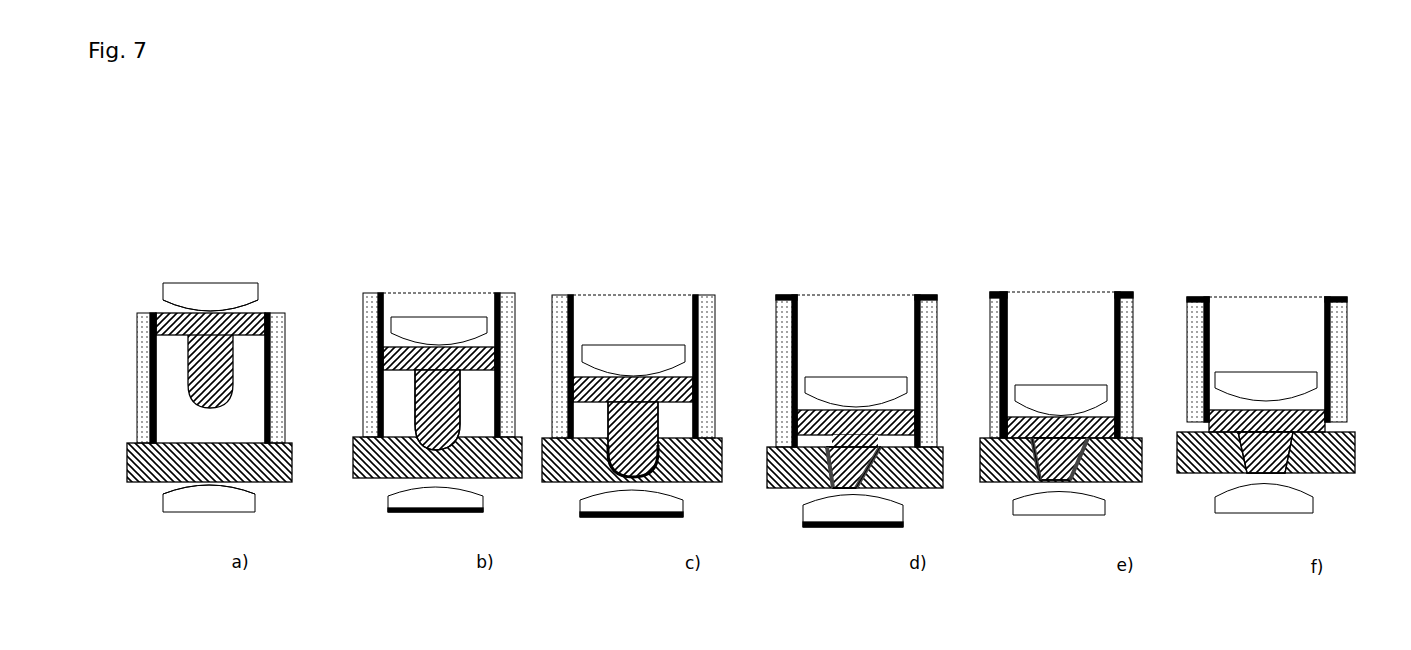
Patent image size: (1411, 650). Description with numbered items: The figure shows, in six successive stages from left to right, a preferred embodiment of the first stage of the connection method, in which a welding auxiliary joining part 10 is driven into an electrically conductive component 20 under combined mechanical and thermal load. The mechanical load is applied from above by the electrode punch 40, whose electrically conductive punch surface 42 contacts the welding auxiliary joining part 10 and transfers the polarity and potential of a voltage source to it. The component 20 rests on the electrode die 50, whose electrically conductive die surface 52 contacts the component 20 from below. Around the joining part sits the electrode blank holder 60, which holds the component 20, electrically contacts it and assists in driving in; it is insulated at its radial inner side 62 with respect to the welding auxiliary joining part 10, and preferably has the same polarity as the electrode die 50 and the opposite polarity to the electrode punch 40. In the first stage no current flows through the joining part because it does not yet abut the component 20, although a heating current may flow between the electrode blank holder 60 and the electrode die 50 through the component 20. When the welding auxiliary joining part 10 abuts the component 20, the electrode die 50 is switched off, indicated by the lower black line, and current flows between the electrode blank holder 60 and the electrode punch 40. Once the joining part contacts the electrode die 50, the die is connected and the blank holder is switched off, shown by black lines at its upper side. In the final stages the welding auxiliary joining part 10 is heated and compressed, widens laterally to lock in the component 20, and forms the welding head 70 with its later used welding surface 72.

The welding auxiliary joining part 10 is at (428, 402).
The component 20 is at (358, 438).
The electrode punch 40 is at (230, 285).
The punch surface 42 is at (175, 303).
The electrode die 50 is at (192, 495).
The die surface 52 is at (255, 492).
The electrode blank holder 60 is at (283, 318).
The radial inner side 62 is at (153, 372).
The welding head 70 is at (832, 488).
The welding surface 72 is at (1032, 480).